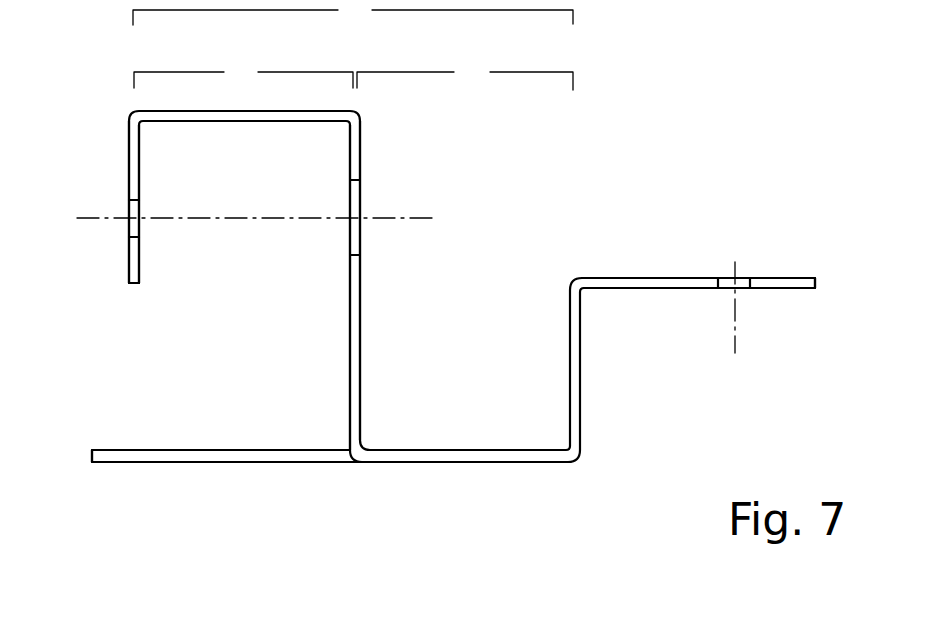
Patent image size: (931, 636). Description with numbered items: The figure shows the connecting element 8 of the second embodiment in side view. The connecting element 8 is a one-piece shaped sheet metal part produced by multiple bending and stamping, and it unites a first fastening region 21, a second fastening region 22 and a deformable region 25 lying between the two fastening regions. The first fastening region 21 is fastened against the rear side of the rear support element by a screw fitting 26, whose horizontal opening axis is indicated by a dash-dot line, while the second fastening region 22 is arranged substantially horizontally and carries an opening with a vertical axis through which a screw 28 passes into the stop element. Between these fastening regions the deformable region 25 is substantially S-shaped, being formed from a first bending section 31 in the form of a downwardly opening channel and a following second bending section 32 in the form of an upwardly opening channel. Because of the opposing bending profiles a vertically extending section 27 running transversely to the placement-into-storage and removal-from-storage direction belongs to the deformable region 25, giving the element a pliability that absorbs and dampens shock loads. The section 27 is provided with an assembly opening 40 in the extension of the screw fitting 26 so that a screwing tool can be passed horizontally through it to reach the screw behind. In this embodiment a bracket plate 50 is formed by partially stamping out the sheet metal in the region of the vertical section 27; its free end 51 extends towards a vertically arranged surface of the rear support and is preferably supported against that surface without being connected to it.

The connecting element 8 is at (528, 468).
The first fastening region 21 is at (130, 174).
The second fastening region 22 is at (663, 286).
The deformable region 25 is at (353, 13).
The screw fitting 26 is at (94, 222).
The section 27 is at (353, 350).
The screw 28 is at (737, 330).
The first bending section 31 is at (243, 72).
The second bending section 32 is at (465, 73).
The assembly opening 40 is at (356, 190).
The bracket plate 50 is at (213, 461).
The free end 51 is at (100, 462).